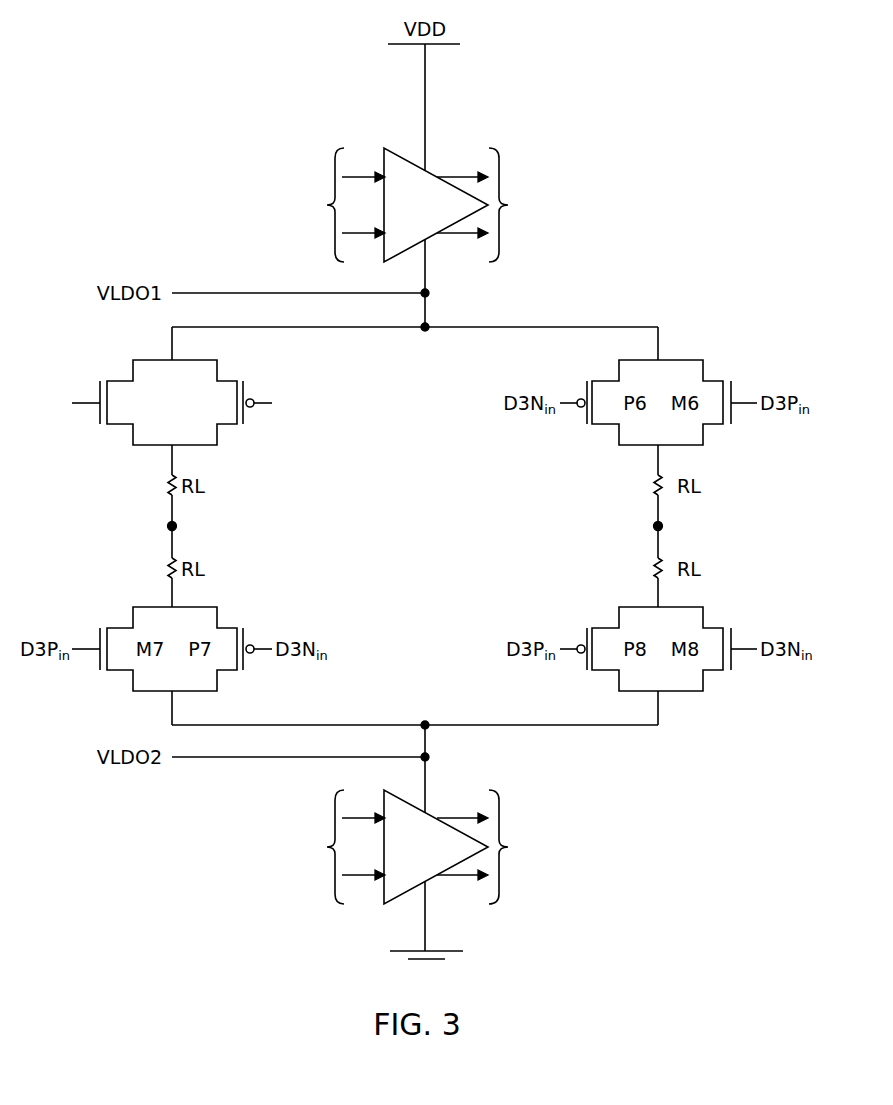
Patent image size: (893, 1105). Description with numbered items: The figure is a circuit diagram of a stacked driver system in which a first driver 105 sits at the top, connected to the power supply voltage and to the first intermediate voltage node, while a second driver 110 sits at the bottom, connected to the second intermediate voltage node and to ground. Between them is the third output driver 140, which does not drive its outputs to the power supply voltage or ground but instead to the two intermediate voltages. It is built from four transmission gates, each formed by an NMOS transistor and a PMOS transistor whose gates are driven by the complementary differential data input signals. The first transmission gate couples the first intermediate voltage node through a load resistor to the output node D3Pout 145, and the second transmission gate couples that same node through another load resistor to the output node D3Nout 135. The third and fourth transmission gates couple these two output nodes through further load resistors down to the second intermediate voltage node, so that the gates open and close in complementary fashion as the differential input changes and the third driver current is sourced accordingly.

The first driver 105 is at (404, 217).
The second driver 110 is at (404, 859).
The output node D3Nout 135 is at (654, 526).
The third output driver 140 is at (103, 356).
The output node D3Pout 145 is at (168, 526).